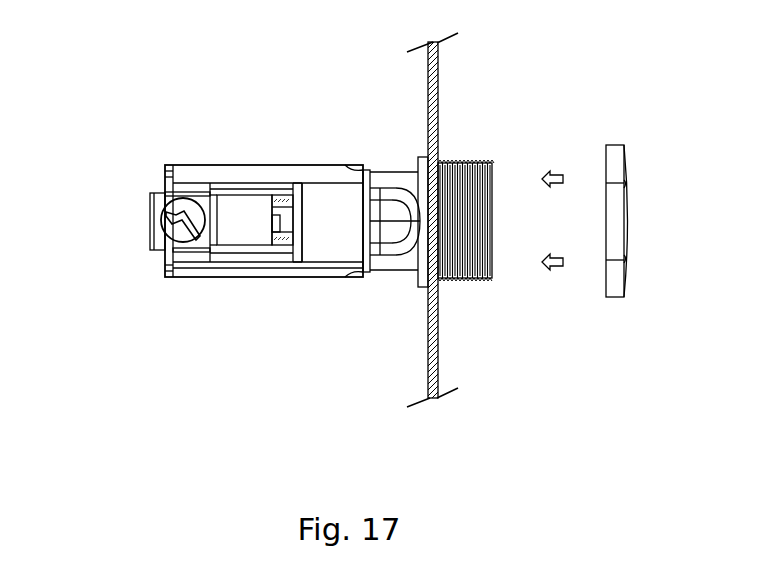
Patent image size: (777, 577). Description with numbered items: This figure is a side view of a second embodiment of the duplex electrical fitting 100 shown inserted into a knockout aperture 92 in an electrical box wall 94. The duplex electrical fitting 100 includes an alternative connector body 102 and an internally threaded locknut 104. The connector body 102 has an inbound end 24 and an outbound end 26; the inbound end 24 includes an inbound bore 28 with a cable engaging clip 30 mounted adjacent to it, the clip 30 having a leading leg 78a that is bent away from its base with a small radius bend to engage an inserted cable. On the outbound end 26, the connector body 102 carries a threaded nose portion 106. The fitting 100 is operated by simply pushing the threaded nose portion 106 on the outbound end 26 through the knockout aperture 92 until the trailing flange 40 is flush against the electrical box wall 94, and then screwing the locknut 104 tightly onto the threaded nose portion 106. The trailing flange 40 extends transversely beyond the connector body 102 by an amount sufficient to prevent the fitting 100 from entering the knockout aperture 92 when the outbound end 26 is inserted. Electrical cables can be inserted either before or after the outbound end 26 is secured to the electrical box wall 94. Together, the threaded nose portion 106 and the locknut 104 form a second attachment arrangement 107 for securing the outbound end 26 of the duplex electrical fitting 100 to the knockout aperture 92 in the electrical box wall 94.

The duplex electrical fitting 100 is at (168, 132).
The cable engaging clip 30 is at (150, 222).
The inbound end 24 is at (165, 253).
The connector body 102 is at (203, 278).
The leading leg 78a is at (240, 228).
The inbound bore 28 is at (288, 218).
The trailing flange 40 is at (425, 157).
The electrical box wall 94 is at (428, 352).
The outbound end 26 is at (493, 218).
The threaded nose portion 106 is at (462, 167).
The knockout aperture 92 is at (438, 278).
The second attachment arrangement 107 is at (624, 105).
The locknut 104 is at (615, 297).